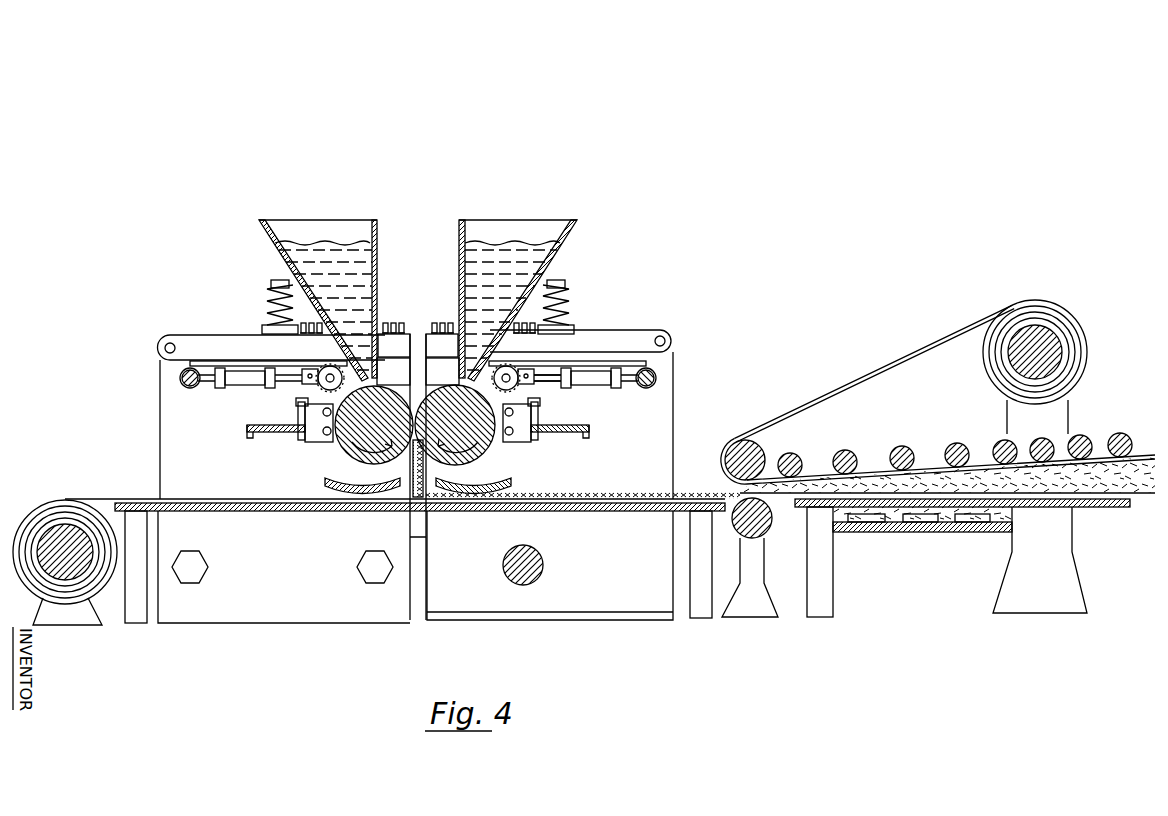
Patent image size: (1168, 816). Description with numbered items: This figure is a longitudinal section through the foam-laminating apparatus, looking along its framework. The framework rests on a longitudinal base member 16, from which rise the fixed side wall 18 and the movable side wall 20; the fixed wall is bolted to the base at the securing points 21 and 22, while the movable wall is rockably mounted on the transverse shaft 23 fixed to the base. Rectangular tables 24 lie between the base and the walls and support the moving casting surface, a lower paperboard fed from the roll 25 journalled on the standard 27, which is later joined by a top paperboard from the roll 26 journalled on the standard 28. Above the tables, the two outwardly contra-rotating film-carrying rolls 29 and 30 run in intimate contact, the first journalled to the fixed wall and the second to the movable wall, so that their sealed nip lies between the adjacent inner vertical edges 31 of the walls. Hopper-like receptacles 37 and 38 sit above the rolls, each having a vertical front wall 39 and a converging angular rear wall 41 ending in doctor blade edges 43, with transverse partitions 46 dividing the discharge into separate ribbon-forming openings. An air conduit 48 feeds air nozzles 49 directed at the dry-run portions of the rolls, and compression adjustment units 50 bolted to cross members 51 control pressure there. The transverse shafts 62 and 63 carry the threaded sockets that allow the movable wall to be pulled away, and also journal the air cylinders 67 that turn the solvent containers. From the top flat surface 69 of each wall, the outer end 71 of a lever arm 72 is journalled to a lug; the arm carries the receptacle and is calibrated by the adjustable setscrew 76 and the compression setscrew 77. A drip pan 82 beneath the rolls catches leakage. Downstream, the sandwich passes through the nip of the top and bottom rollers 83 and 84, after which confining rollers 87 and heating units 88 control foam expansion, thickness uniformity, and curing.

The base member 16 is at (395, 584).
The fixed side wall 18 is at (170, 428).
The movable side wall 20 is at (662, 407).
The bolted securing point 21 is at (190, 570).
The bolted securing point 22 is at (377, 565).
The transverse shaft 23 is at (542, 576).
The rectangular-shaped table 24 is at (1107, 505).
The roll of paperboard 25 is at (66, 533).
The roll of top-layer paperboard 26 is at (1043, 340).
The standard 27 is at (80, 615).
The standard 28 is at (1052, 595).
The contra-rotating film-carrying roll 29 is at (340, 448).
The contra-rotating film-carrying roll 30 is at (490, 450).
The inner vertical edge 31 is at (426, 390).
The receptacle 37 is at (346, 232).
The receptacle 38 is at (512, 227).
The vertical front wall 39 is at (460, 270).
The angular rear wall 41 is at (266, 233).
The metering or doctor blade edge 43 is at (596, 340).
The transverse partition 46 is at (360, 346).
The air conduit 48 is at (342, 460).
The air nozzle 49 is at (425, 507).
The compression adjustment unit 50 is at (300, 408).
The cross member 51 is at (247, 432).
The transverse shaft 62 is at (180, 380).
The transverse shaft 63 is at (652, 373).
The air cylinder 67 is at (240, 375).
The top flat surface 69 is at (588, 362).
The outer end of lever arm 71 is at (170, 340).
The lever arm 72 is at (606, 365).
The adjustable setscrew 76 is at (266, 320).
The compression setscrew 77 is at (268, 303).
The drip pan 82 is at (477, 500).
The top roller 83 is at (763, 452).
The bottom roller 84 is at (760, 535).
The confining roller 87 is at (858, 447).
The heating unit 88 is at (922, 530).